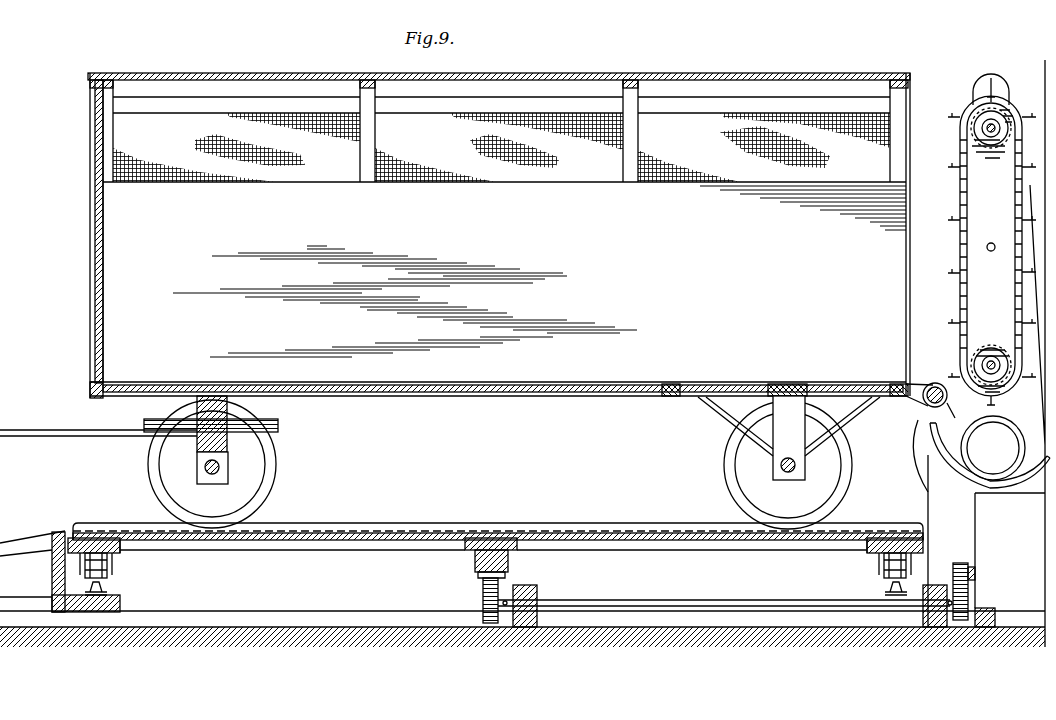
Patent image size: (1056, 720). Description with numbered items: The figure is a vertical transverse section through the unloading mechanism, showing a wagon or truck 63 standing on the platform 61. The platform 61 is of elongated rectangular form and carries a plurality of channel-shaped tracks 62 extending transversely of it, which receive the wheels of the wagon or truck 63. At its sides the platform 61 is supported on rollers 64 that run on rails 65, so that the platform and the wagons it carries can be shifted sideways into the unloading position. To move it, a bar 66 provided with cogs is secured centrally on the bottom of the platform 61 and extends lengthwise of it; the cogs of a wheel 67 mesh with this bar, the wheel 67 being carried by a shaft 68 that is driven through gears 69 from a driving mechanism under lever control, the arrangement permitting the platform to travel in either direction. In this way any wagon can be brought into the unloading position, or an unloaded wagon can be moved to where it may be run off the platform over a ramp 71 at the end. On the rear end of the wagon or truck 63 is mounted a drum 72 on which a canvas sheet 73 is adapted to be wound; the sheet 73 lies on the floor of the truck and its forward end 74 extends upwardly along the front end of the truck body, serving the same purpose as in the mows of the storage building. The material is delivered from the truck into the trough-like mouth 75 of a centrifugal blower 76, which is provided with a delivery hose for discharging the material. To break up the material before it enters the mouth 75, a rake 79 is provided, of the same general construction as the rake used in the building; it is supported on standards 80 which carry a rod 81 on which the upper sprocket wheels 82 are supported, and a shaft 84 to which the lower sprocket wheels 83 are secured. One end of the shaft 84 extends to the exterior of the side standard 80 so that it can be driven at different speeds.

The platform 61 is at (333, 548).
The tracks 62 is at (445, 523).
The wagon or truck 63 is at (147, 312).
The rollers 64 is at (105, 566).
The rails 65 is at (105, 586).
The bar 66 is at (508, 572).
The wheel 67 is at (480, 594).
The shaft 68 is at (650, 600).
The gears 69 is at (965, 556).
The ramp 71 is at (25, 535).
The drum 72 is at (925, 403).
The canvas sheet 73 is at (630, 382).
The forward end 74 is at (103, 275).
The trough-like mouth 75 is at (940, 458).
The centrifugal blower 76 is at (923, 483).
The rake 79 is at (946, 158).
The standards 80 is at (983, 80).
The rod 81 is at (991, 140).
The upper sprocket wheels 82 is at (1010, 96).
The lower sprocket wheels 83 is at (980, 349).
The shaft 84 is at (982, 368).